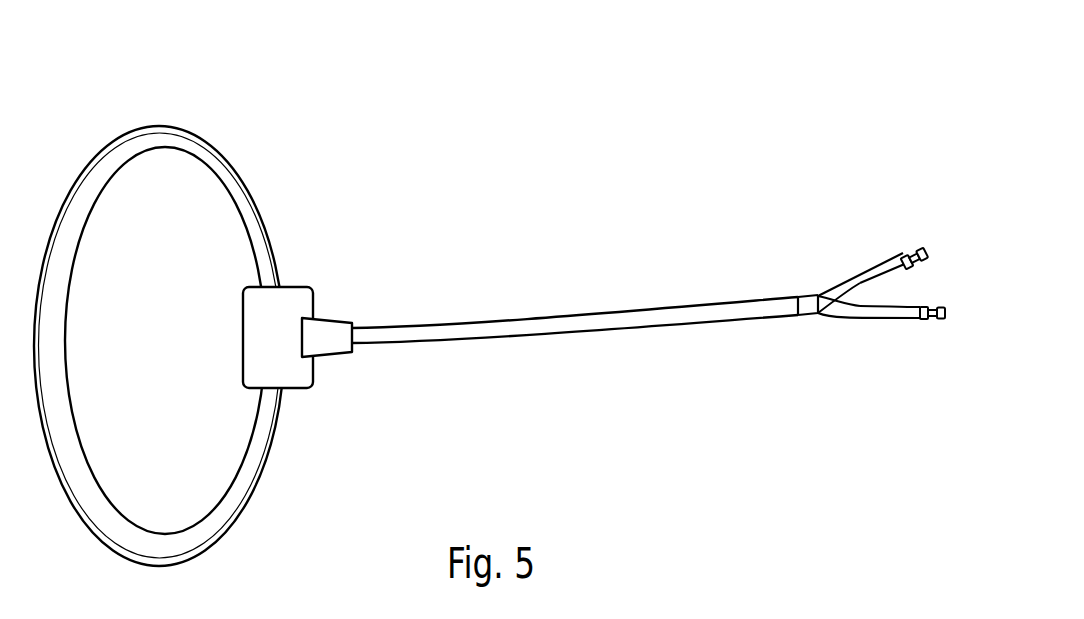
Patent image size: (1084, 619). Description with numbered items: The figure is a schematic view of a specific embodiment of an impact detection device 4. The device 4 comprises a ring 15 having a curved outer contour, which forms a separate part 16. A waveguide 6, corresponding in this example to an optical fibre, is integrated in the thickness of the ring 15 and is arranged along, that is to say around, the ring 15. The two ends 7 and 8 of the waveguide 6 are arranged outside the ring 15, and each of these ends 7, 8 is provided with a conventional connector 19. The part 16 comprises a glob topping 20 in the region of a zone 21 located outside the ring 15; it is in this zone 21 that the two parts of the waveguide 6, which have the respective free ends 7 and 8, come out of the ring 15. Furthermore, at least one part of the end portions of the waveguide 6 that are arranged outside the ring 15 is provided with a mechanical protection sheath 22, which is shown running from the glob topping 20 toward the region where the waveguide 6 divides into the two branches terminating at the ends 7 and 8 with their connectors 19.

The impact detection device 4 is at (283, 185).
The waveguide 6 is at (860, 308).
The end of the waveguide 7 is at (873, 249).
The end of the waveguide 8 is at (908, 338).
The ring 15 is at (245, 483).
The separate part 16 is at (142, 106).
The connector 19 is at (910, 250).
The glob topping 20 is at (297, 295).
The zone 21 is at (229, 344).
The mechanical protection sheath 22 is at (540, 326).